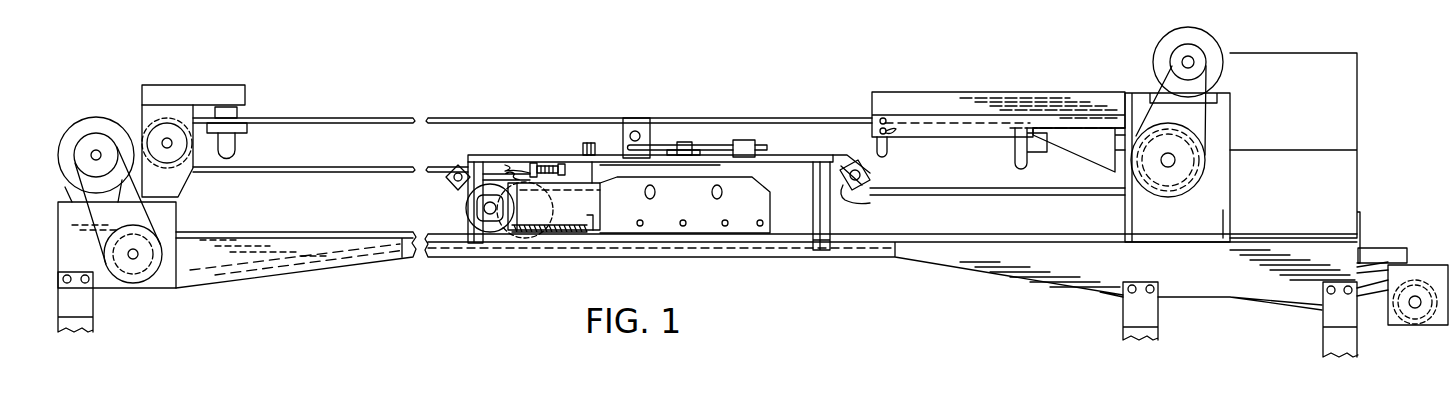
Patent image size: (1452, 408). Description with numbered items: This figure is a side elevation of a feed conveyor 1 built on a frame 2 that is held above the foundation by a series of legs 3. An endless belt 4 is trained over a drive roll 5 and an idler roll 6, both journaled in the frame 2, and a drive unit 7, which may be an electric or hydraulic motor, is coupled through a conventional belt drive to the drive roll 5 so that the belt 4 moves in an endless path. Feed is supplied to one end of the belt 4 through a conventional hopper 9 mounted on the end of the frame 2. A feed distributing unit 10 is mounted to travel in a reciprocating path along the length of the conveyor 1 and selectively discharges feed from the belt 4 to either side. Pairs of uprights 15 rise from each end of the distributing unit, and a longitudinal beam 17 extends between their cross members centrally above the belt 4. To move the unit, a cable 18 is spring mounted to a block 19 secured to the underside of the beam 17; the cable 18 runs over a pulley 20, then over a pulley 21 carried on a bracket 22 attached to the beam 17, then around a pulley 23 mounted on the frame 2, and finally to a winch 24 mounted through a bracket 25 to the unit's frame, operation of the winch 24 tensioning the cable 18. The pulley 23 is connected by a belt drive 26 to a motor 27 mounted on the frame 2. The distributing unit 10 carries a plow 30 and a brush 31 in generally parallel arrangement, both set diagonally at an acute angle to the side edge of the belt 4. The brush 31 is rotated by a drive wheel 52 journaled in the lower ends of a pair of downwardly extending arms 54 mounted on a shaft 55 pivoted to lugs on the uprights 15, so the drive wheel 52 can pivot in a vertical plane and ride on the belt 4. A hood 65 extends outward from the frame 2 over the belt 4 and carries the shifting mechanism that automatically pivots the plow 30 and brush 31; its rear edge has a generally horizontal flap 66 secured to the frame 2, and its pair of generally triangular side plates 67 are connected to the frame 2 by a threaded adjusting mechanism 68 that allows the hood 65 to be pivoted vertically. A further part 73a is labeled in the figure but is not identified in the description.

The feed conveyor 1 is at (479, 111).
The frame 2 is at (996, 279).
The legs 3 is at (90, 326).
The endless belt 4 is at (268, 232).
The drive roll 5 is at (142, 278).
The idler roll 6 is at (1430, 285).
The drive unit 7 is at (66, 138).
The hopper 9 is at (1360, 118).
The feed distributing unit 10 is at (545, 232).
The uprights 15 is at (478, 248).
The longitudinal beam 17 is at (545, 155).
The cable 18 is at (297, 167).
The block 19 is at (532, 165).
The pulley 20 is at (168, 128).
The pulley 21 is at (655, 130).
The bracket 22 is at (628, 118).
The pulley 23 is at (1187, 188).
The winch 24 is at (843, 193).
The bracket 25 is at (870, 163).
The belt drive 26 is at (1204, 125).
The motor 27 is at (1213, 45).
The plow 30 is at (740, 224).
The brush 31 is at (570, 233).
The drive wheel 52 is at (462, 205).
The arms 54 is at (463, 190).
The shaft 55 is at (465, 170).
The hood 65 is at (987, 90).
The flap 66 is at (1140, 93).
The side plates 67 is at (1088, 150).
The threaded adjusting mechanism 68 is at (1115, 170).
The latch 73a is at (892, 142).